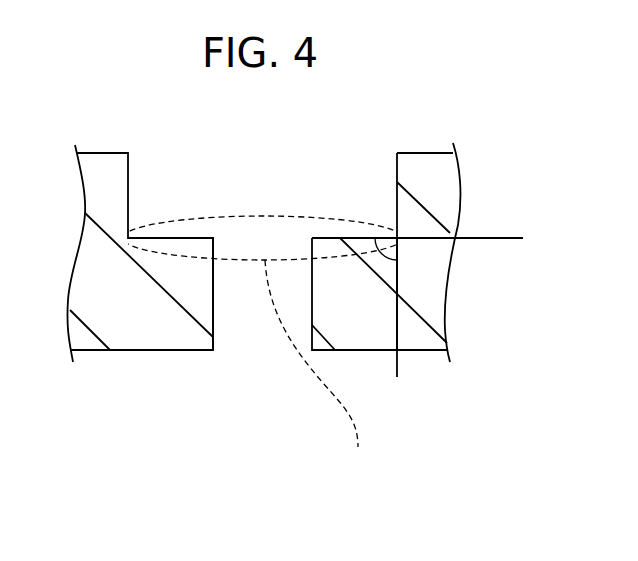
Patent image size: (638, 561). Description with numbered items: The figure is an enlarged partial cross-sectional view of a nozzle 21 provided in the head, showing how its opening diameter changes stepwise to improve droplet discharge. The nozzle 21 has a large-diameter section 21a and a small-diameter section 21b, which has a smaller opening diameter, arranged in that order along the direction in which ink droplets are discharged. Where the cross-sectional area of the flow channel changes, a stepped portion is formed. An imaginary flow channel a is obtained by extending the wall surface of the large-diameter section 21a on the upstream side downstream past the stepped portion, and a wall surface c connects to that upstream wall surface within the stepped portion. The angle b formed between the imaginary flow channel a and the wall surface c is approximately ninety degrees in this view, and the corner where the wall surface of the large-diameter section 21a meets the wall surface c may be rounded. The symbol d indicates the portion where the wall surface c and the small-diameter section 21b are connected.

The nozzle 21 is at (300, 313).
The large-diameter section 21a is at (397, 203).
The small-diameter section 21b is at (213, 310).
The imaginary flow channel a is at (397, 362).
The angle b is at (380, 260).
The wall surface c is at (497, 238).
The connecting portion d is at (213, 238).